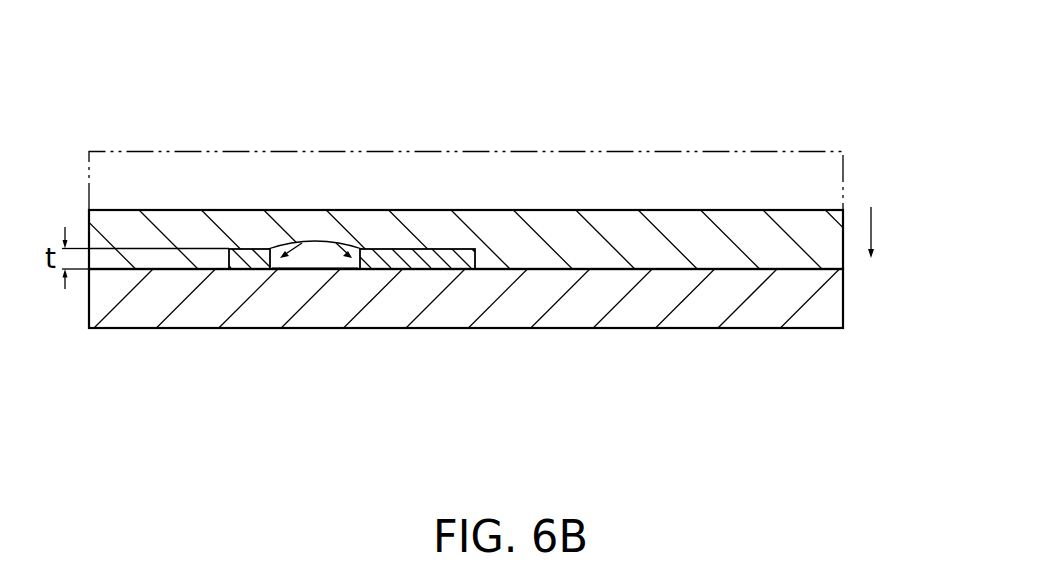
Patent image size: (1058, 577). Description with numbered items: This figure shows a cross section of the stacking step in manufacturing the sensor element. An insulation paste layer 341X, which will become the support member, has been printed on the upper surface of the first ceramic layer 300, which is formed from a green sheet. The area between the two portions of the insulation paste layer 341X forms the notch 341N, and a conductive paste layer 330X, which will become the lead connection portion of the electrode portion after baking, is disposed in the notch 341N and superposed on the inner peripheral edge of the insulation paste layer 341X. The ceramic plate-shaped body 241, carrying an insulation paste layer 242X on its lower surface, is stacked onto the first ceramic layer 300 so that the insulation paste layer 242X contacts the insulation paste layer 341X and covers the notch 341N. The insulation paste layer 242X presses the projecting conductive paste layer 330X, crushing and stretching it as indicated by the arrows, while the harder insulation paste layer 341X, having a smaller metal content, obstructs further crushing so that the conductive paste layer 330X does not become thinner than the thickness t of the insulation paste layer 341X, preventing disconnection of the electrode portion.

The ceramic plate-shaped body 241 is at (763, 156).
The insulation paste layer 242X is at (810, 218).
The first ceramic layer 300 is at (828, 297).
The conductive paste layer 330X is at (320, 242).
The notch 341N is at (322, 276).
The insulation paste layer 341X is at (247, 260).